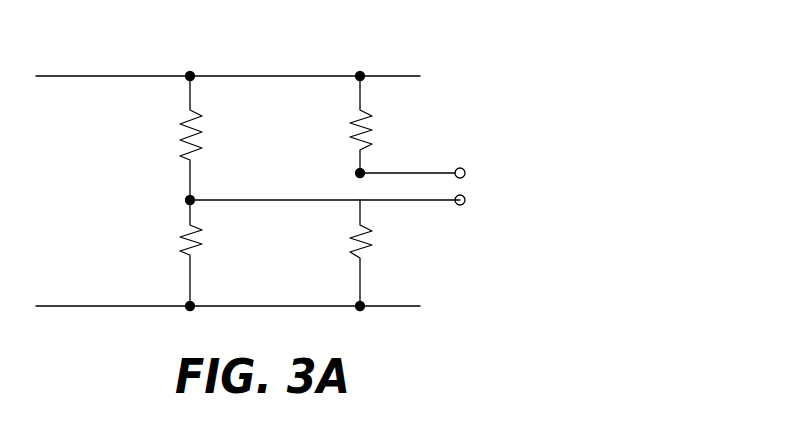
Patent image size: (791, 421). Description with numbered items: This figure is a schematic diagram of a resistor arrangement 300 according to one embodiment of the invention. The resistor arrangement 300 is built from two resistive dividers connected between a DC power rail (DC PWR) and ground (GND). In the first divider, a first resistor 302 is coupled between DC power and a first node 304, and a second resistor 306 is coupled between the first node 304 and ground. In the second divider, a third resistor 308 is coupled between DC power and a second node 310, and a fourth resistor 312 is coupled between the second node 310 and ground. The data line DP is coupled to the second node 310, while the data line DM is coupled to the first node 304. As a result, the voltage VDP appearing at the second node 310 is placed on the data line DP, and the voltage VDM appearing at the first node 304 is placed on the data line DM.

The resistor arrangement 300 is at (556, 80).
The first resistor 302 is at (180, 131).
The first node 304 is at (186, 198).
The second resistor 306 is at (180, 242).
The third resistor 308 is at (375, 121).
The second node 310 is at (365, 170).
The fourth resistor 312 is at (375, 247).